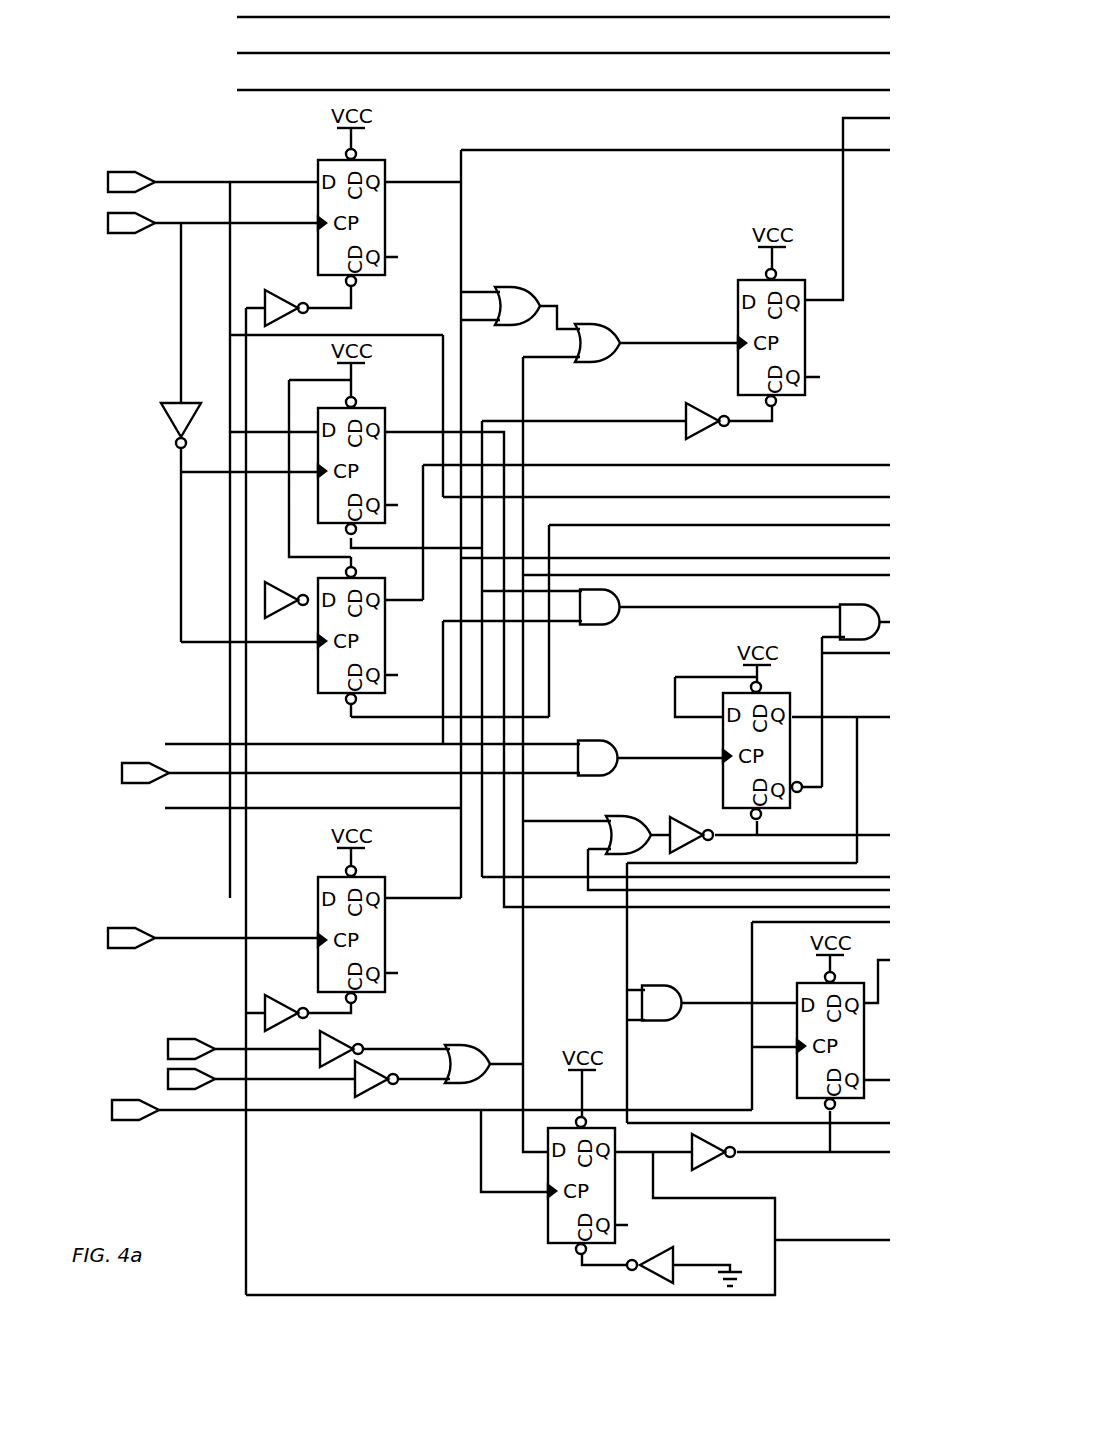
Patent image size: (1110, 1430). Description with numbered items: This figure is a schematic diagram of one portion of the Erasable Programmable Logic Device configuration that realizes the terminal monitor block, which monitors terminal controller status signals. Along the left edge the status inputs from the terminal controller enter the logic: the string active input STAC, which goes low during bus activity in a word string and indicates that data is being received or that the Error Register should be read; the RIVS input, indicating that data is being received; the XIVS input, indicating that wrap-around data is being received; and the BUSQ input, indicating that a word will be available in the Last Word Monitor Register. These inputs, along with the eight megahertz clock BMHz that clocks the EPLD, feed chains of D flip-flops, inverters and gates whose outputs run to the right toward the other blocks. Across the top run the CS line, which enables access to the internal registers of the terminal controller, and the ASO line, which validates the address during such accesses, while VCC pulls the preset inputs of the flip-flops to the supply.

The STAC input STAC is at (180, 183).
The RIVS input RIVS is at (180, 224).
The BUSQ input BUSQ is at (313, 775).
The XIVS input XIVS is at (180, 940).
The C8MHz input BMHz is at (397, 1110).
The CS output CS is at (509, 14).
The ASO output ASO is at (509, 46).
The VCC supply connections VCC is at (591, 610).